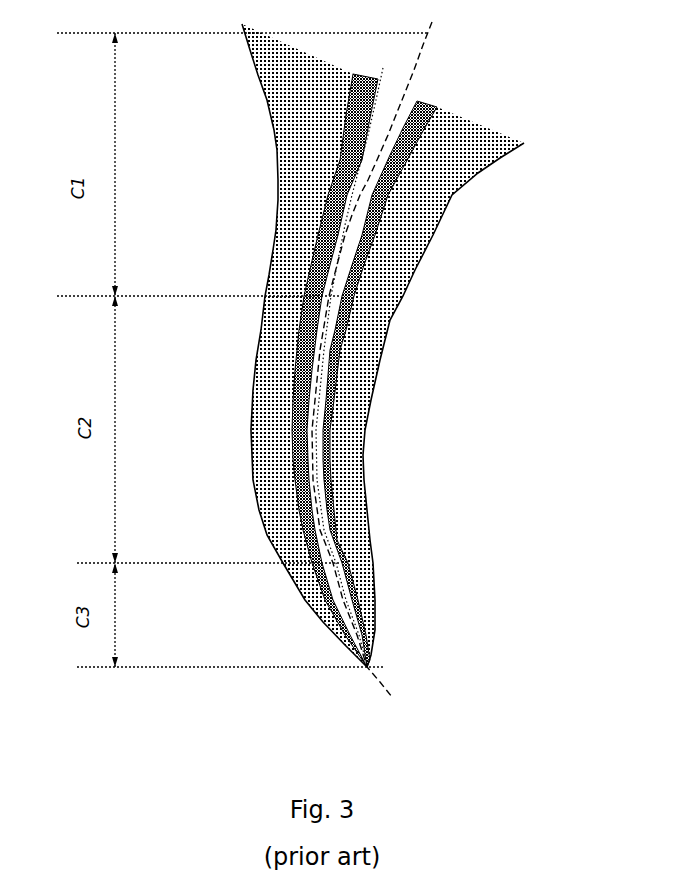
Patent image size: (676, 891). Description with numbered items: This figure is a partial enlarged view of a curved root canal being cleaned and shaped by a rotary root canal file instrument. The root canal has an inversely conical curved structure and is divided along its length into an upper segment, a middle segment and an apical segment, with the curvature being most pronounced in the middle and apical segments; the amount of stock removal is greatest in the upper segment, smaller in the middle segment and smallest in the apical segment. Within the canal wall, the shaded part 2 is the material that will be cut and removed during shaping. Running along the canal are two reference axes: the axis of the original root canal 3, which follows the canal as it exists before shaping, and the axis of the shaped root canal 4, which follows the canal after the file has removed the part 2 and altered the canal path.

The part to be cut and removed 2 is at (407, 167).
The axis of the original root canal 3 is at (345, 245).
The axis of the shaped root canal 4 is at (320, 332).